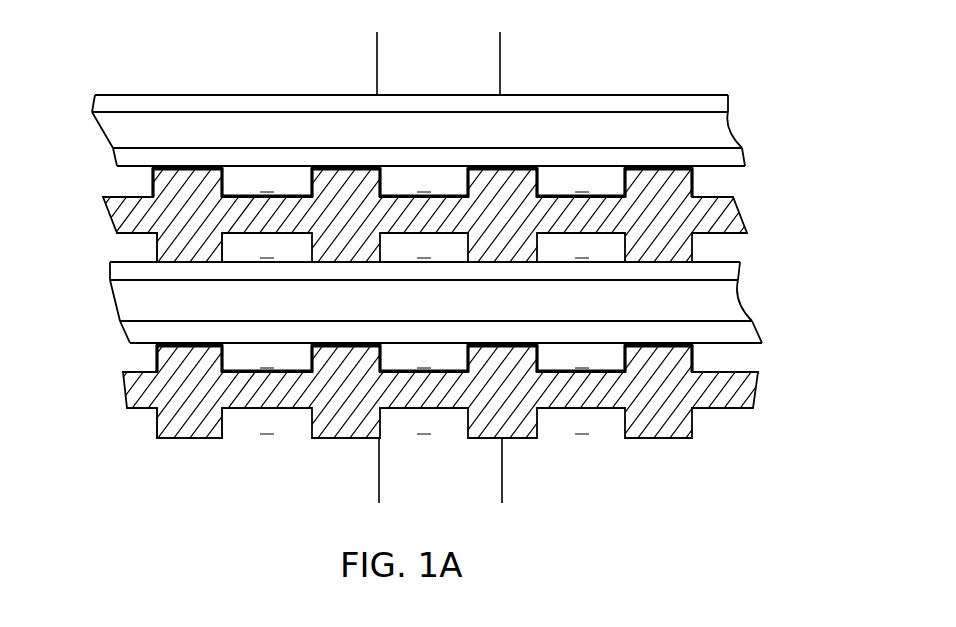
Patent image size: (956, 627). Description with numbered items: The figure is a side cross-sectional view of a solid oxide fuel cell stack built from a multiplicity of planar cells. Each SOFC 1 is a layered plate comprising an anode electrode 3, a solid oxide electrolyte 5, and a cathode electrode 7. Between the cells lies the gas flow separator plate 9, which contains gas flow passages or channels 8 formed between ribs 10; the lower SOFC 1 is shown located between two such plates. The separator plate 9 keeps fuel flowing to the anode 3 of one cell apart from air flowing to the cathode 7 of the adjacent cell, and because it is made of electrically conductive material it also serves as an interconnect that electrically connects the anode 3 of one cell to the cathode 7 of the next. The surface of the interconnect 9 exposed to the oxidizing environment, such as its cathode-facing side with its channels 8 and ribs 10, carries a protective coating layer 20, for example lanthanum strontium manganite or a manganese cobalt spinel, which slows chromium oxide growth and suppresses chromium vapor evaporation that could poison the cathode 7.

The SOFC 1 is at (424, 214).
The anode electrode 3 is at (100, 107).
The solid oxide electrolyte 5 is at (107, 135).
The cathode electrode 7 is at (117, 160).
The gas flow passages or channels 8 is at (423, 302).
The gas flow separator plate 9 is at (765, 178).
The ribs 10 is at (153, 185).
The protective coating layer 20 is at (246, 195).